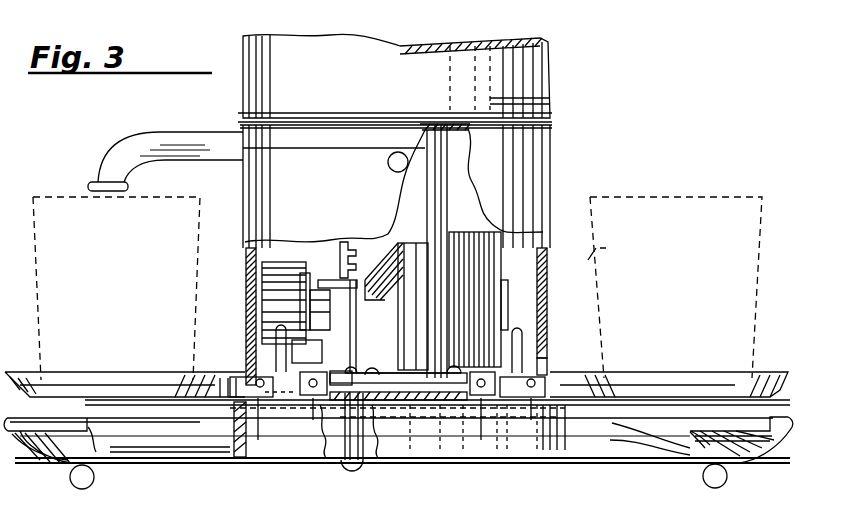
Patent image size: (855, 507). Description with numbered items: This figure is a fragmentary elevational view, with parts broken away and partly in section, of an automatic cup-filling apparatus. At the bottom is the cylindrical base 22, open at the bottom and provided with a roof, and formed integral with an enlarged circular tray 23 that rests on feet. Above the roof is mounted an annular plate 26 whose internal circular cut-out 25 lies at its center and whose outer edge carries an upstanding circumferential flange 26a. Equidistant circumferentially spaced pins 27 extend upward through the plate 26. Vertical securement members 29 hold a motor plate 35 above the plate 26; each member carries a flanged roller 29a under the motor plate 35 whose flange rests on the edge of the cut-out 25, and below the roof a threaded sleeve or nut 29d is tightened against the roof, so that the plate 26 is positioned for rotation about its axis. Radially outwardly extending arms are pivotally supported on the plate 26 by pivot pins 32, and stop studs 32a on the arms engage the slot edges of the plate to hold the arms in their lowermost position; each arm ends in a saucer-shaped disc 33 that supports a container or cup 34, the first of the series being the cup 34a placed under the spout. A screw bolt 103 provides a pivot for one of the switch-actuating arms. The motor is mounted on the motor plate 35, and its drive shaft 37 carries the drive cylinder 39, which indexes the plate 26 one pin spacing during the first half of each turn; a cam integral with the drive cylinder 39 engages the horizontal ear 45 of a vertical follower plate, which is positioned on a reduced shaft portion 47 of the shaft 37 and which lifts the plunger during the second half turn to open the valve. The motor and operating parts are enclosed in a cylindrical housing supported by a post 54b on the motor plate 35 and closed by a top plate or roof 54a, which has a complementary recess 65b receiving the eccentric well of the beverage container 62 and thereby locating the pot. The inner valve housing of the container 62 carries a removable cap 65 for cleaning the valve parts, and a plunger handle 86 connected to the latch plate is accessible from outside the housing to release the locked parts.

The beverage container 62 is at (550, 82).
The removable cap 65 is at (266, 130).
The complementary recess 65b is at (295, 190).
The plunger handle 86 is at (388, 166).
The post 54b is at (418, 212).
The top plate or roof 54a is at (472, 174).
The container or cup 34 is at (42, 197).
The cup 34a is at (585, 265).
The drive cylinder 39 is at (282, 258).
The horizontal ear 45 is at (320, 274).
The reduced shaft portion 47 is at (392, 302).
The drive shaft 37 is at (400, 306).
The vertical securement member 29 is at (368, 368).
The flanged roller 29a is at (340, 340).
The pin 27 is at (288, 360).
The saucer-shaped disc 33 is at (158, 372).
The stop stud 32a is at (256, 381).
The pivot pin 32 is at (262, 425).
The upstanding circumferential flange 26a is at (552, 382).
The annular plate 26 is at (518, 430).
The internal circular cut-out 25 is at (382, 400).
The motor plate 35 is at (420, 410).
The cylindrical base 22 is at (565, 407).
The circular tray 23 is at (48, 452).
The screw bolt 103 is at (235, 410).
The threaded sleeve or nut 29d is at (362, 463).